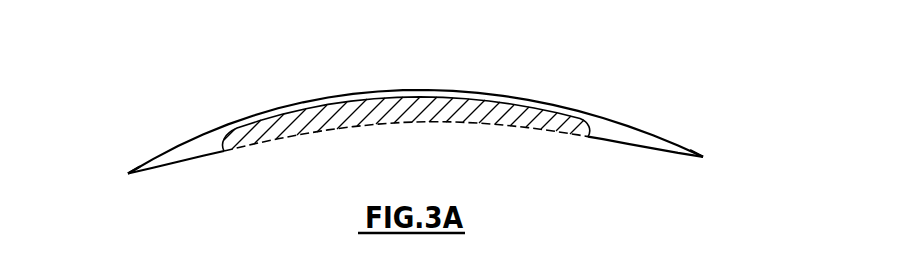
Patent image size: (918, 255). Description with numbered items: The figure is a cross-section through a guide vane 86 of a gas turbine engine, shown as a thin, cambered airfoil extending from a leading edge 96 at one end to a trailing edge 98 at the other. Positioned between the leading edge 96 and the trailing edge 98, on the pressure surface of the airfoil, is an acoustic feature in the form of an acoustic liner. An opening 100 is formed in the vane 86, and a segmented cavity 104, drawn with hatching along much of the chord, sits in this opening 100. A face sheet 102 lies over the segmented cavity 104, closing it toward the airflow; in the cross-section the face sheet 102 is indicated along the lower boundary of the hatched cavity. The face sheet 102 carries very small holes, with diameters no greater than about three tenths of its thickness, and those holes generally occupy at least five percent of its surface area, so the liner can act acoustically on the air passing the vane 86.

The guide vane 86 is at (186, 114).
The leading edge 96 is at (124, 174).
The trailing edge 98 is at (706, 156).
The opening 100 is at (342, 111).
The face sheet 102 is at (510, 127).
The segmented cavity 104 is at (498, 112).